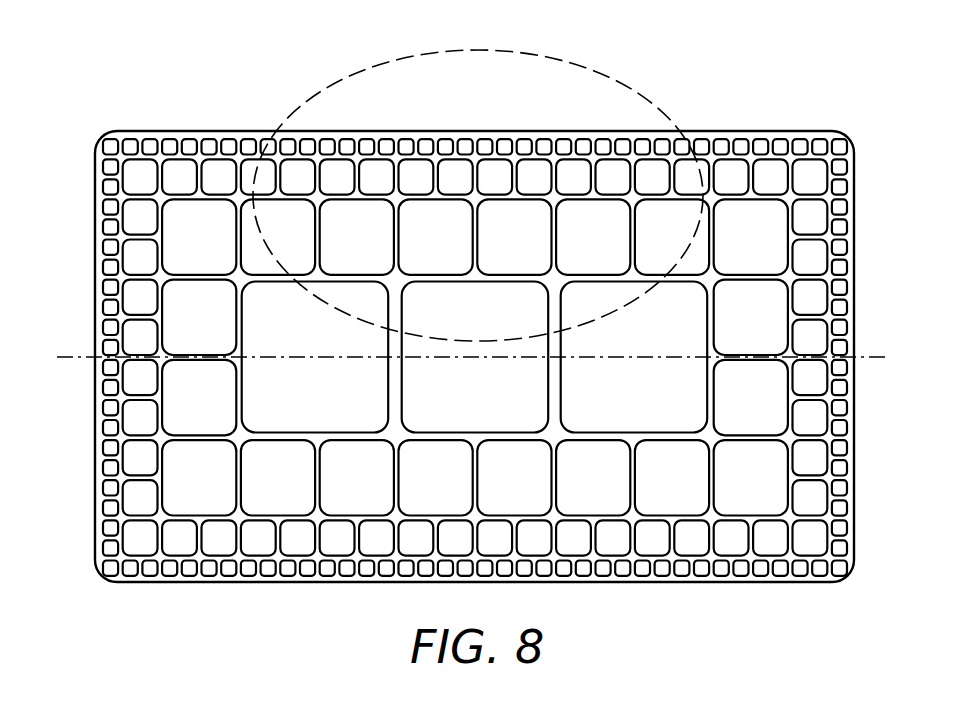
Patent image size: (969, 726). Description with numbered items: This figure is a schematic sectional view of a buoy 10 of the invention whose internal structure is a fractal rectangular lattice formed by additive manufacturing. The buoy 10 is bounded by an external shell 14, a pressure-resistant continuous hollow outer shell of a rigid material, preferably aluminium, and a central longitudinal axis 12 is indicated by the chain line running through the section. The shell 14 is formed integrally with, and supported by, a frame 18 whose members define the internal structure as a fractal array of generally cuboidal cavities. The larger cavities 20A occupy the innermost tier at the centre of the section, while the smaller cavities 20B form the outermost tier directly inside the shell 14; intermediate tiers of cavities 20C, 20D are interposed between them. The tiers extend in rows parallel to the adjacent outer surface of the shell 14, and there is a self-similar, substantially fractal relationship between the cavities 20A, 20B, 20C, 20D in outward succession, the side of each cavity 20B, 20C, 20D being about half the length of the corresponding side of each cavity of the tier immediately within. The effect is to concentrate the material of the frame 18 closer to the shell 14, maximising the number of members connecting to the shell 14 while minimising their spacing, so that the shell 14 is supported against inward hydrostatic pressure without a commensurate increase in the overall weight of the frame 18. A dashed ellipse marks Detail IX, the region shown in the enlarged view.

The buoy 10 is at (68, 76).
The central longitudinal axis 12 is at (884, 360).
The external shell 14 is at (100, 452).
The frame 18 is at (400, 382).
The larger cavities of the innermost tier 20A is at (338, 409).
The smaller cavities of the outermost tier 20B is at (268, 572).
The intermediate tier cavities 20C is at (813, 531).
The intermediate tier cavities 20D is at (187, 217).
The Detail IX is at (345, 75).